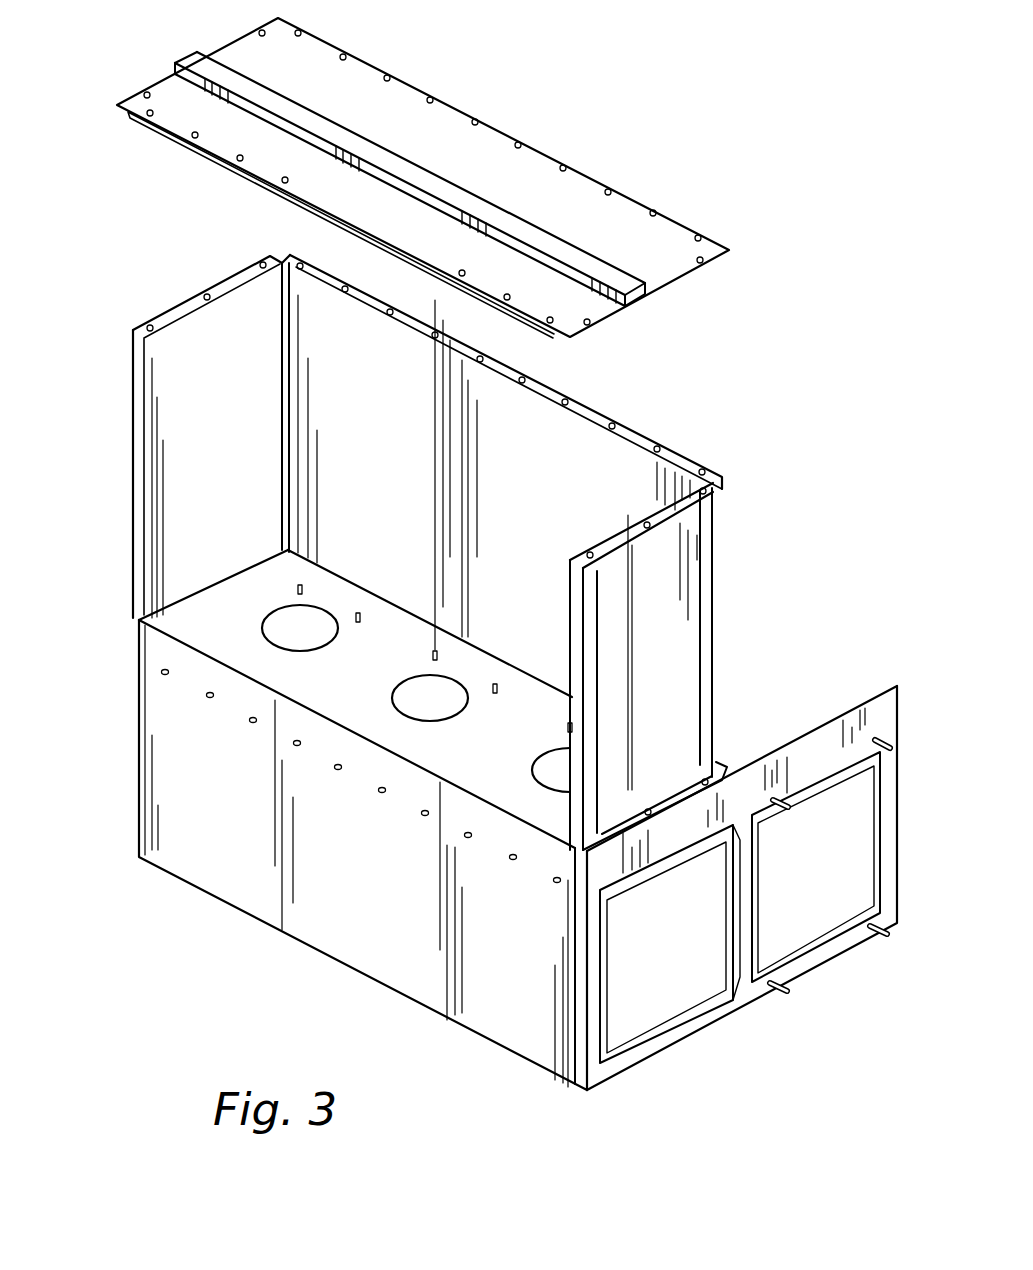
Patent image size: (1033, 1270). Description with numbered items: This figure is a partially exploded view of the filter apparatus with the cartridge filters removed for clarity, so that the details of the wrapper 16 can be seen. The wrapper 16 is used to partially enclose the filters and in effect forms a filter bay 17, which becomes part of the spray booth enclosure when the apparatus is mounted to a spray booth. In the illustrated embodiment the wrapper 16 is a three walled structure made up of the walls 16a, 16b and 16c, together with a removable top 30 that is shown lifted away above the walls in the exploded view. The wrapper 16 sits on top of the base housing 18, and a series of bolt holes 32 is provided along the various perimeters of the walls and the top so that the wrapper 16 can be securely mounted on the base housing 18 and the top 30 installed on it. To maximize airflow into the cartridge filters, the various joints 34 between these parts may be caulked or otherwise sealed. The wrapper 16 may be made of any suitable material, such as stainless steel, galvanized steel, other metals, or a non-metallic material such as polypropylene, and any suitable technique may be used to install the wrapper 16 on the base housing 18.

The wrapper 16 is at (104, 56).
The wall of the wrapper 16a is at (670, 571).
The wall of the wrapper 16b is at (627, 477).
The wall of the wrapper 16c is at (222, 332).
The filter bay 17 is at (350, 663).
The base housing 18 is at (352, 905).
The removable top 30 is at (488, 148).
The bolt holes 32 is at (612, 190).
The joints 34 is at (250, 576).